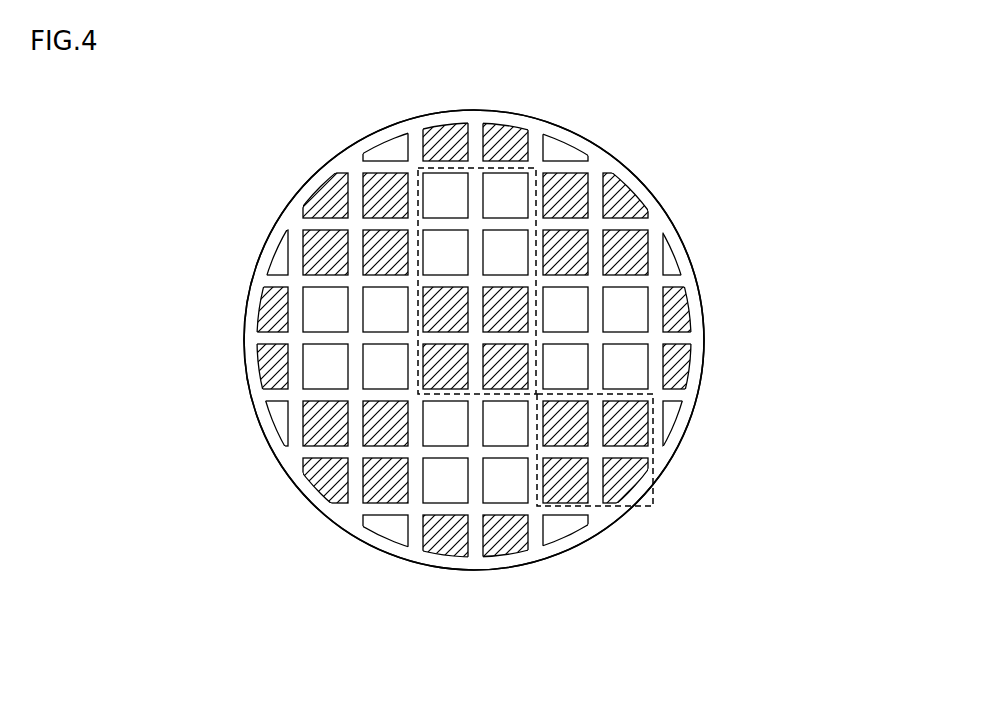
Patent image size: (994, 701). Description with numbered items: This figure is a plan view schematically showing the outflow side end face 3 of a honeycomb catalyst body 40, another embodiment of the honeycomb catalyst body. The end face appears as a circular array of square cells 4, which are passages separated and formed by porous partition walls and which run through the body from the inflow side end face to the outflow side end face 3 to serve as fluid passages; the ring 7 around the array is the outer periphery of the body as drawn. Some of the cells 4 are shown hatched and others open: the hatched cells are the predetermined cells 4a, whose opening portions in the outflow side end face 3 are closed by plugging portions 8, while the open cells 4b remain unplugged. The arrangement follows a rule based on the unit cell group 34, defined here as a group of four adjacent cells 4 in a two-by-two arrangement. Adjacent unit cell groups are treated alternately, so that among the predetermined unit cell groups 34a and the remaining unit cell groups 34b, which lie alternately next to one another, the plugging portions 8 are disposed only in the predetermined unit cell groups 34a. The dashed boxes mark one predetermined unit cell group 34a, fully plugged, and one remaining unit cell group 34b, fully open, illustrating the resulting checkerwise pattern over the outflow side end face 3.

The honeycomb catalyst body 40 is at (787, 56).
The outflow side end face 3 is at (645, 178).
The outer peripheral wall 7 is at (697, 354).
The cells 4 is at (519, 338).
The predetermined cells 4a is at (578, 466).
The open cells 4b is at (644, 296).
The plugging portions 8 is at (627, 430).
The unit cell group 34 is at (535, 346).
The predetermined unit cell groups 34a is at (650, 499).
The remaining unit cell groups 34b is at (442, 168).